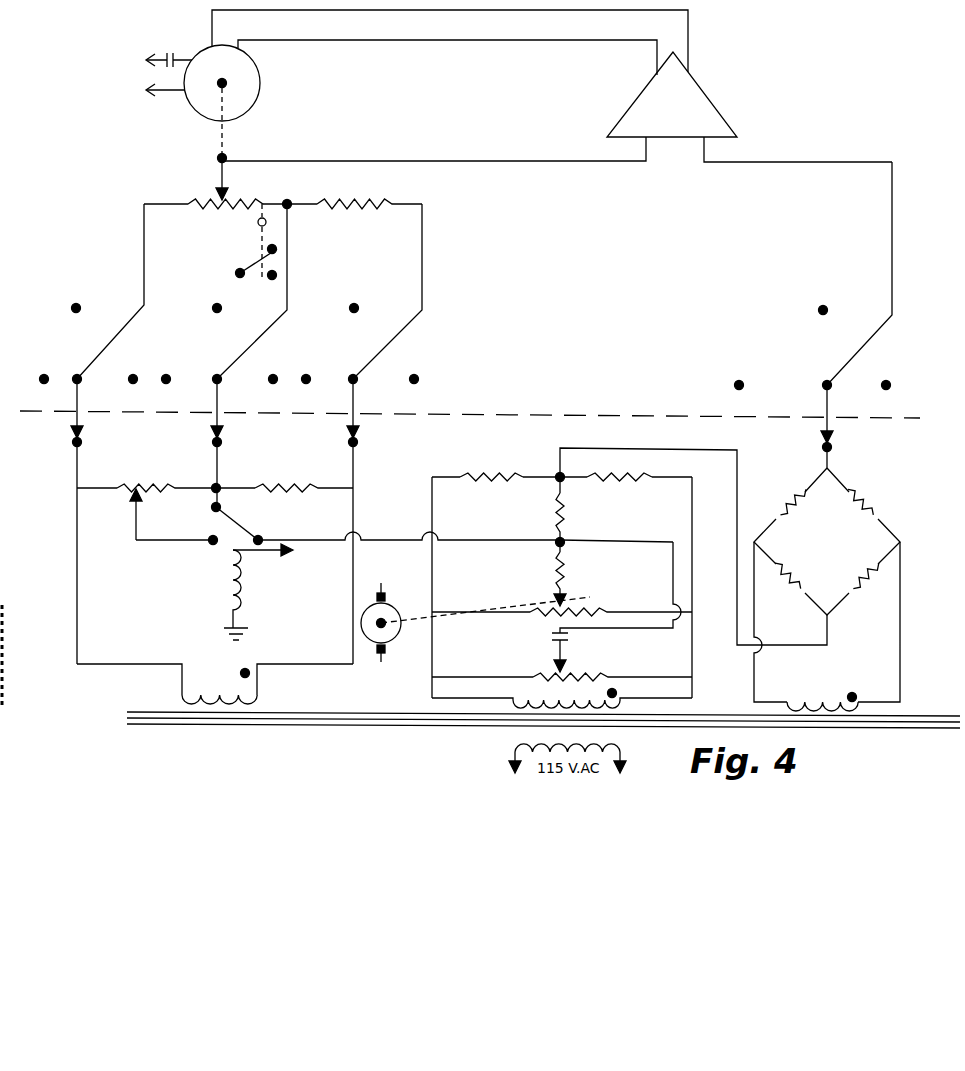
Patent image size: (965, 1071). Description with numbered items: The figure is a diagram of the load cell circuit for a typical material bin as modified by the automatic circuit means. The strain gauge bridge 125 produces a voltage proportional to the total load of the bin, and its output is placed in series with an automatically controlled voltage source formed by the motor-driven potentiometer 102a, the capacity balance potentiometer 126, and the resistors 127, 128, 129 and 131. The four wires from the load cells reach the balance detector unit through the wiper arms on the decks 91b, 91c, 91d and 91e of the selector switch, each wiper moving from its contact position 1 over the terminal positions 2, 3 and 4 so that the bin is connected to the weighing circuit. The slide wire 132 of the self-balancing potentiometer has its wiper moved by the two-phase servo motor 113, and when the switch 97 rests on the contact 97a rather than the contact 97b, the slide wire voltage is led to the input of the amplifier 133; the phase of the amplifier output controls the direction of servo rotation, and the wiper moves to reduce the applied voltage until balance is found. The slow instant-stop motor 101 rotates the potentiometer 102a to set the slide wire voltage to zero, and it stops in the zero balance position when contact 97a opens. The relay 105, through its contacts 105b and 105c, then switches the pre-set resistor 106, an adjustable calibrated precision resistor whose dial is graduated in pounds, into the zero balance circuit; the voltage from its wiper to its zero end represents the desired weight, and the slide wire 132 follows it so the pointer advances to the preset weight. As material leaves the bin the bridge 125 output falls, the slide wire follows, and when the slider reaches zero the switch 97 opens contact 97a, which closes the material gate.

The two-phase servo motor 113 is at (402, 84).
The amplifier 133 is at (557, 110).
The slide wire 132 is at (283, 192).
The switch 97 is at (244, 243).
The switch contact 97a is at (280, 250).
The switch contact 97b is at (280, 276).
The selector switch deck 91b is at (92, 409).
The selector switch deck 91c is at (231, 409).
The selector switch deck 91d is at (368, 409).
The selector switch deck 91e is at (841, 414).
The pre-set resistor 106 is at (166, 501).
The relay 105 is at (258, 592).
The relay contact 105b is at (177, 551).
The relay contact 105c is at (209, 519).
The instant-stop motor 101 is at (475, 623).
The resistor 127 is at (518, 470).
The resistor 128 is at (640, 474).
The resistor 129 is at (565, 521).
The resistor 131 is at (564, 571).
The motor-driven potentiometer 102a is at (526, 606).
The capacity balance potentiometer 126 is at (542, 672).
The strain gauge bridge 125 is at (827, 541).
The contact terminal 1 is at (459, 448).
The contact terminal 2 is at (509, 396).
The contact terminal 3 is at (449, 300).
The contact terminal 4 is at (391, 396).